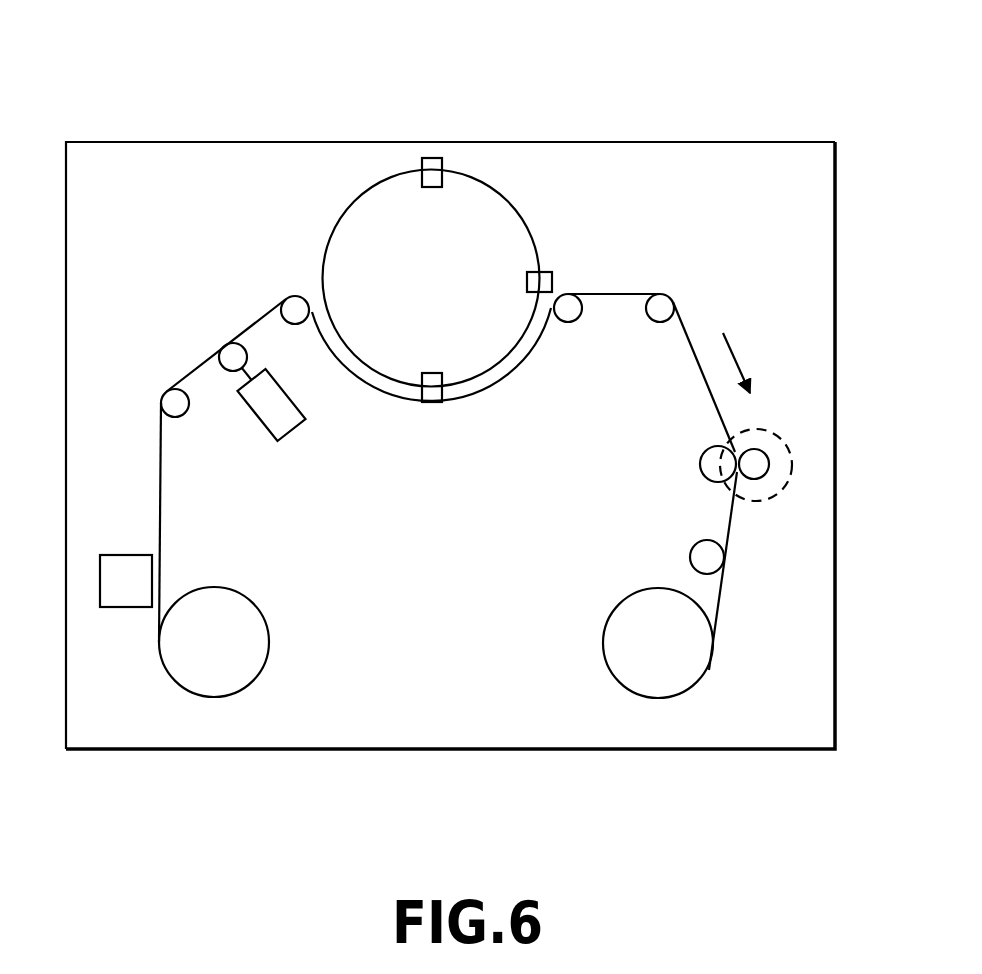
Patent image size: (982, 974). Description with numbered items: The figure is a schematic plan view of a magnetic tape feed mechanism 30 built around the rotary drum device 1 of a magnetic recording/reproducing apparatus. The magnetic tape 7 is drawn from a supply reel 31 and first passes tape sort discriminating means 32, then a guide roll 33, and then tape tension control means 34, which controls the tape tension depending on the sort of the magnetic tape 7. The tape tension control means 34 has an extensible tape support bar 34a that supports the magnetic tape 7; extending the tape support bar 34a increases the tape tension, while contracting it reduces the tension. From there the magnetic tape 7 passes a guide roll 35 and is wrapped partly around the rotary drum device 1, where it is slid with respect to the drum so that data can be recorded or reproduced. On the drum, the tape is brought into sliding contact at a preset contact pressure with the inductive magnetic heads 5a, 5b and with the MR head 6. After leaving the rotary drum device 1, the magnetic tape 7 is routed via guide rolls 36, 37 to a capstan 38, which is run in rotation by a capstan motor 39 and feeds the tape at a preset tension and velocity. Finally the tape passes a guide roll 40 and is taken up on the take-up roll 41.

The magnetic tape feed mechanism 30 is at (608, 113).
The rotary drum device 1 is at (548, 235).
The inductive magnetic head 5a is at (430, 168).
The inductive magnetic head 5b is at (433, 392).
The MR head 6 is at (553, 282).
The magnetic tape 7 is at (622, 294).
The supply reel 31 is at (243, 632).
The tape sort discriminating means 32 is at (122, 565).
The guide roll 33 is at (175, 408).
The tape tension control means 34 is at (280, 417).
The tape support bar 34a is at (245, 372).
The guide roll 35 is at (295, 313).
The guide roll 36 is at (566, 312).
The guide roll 37 is at (660, 313).
The capstan 38 is at (755, 463).
The capstan motor 39 is at (768, 502).
The guide roll 40 is at (697, 555).
The take-up roll 41 is at (690, 657).